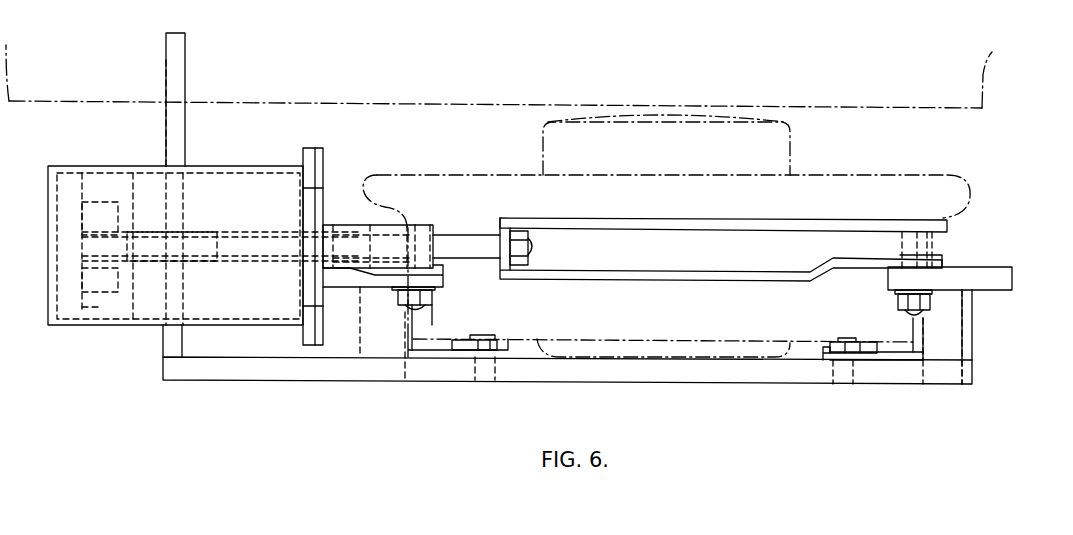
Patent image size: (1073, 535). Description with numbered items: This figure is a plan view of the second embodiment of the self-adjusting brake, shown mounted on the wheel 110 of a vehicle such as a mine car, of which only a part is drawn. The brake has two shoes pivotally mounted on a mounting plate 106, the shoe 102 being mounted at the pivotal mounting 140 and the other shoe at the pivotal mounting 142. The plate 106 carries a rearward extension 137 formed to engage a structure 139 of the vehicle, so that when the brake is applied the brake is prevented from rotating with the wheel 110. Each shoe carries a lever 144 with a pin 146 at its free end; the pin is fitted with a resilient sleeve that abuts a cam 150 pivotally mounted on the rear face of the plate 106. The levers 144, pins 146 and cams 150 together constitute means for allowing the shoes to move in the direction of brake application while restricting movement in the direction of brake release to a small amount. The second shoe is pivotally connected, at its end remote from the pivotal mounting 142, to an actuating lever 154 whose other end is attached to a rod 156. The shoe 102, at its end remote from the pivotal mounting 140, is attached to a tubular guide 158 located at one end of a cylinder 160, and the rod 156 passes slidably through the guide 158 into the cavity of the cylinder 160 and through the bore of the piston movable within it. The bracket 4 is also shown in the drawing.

The mounting bracket 4 is at (1000, 277).
The shoe 102 is at (353, 282).
The mounting plate 106 is at (192, 370).
The wheel 110 is at (836, 175).
The rearward extension 137 is at (174, 342).
The structure 139 is at (885, 108).
The pivotal mounting 140 is at (360, 383).
The pivotal mounting 142 is at (940, 375).
The lever 144 is at (910, 357).
The pin 146 is at (503, 345).
The cam 150 is at (465, 347).
The actuating lever 154 is at (675, 273).
The rod 156 is at (463, 233).
The tubular guide 158 is at (337, 222).
The cylinder 160 is at (218, 167).